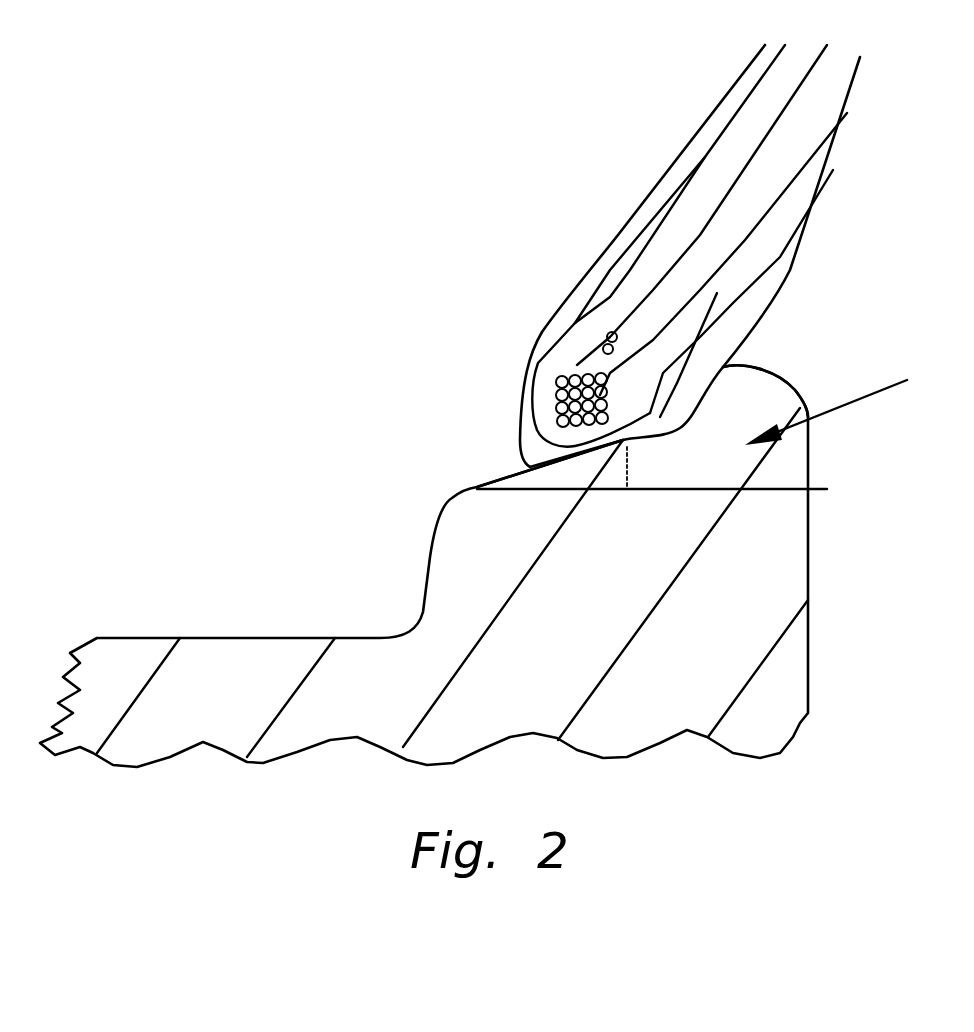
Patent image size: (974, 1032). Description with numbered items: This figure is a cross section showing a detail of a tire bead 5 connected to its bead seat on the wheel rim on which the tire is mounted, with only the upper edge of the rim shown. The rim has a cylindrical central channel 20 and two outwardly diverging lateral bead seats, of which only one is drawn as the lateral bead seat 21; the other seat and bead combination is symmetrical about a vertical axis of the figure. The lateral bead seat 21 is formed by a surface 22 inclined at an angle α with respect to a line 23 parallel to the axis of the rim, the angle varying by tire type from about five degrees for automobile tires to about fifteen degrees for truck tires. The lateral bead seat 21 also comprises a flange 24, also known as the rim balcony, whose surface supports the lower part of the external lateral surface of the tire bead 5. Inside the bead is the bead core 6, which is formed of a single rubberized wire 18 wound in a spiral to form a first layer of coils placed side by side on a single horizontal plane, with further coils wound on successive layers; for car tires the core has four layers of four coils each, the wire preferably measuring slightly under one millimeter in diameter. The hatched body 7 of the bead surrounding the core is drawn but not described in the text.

The tire bead 5 is at (583, 270).
The bead core 6 is at (550, 410).
The coating layer of tool 7 is at (689, 246).
The rubberized wire 18 is at (578, 363).
The cylindrical central channel 20 is at (264, 636).
The lateral bead seat 21 is at (848, 402).
The inclined surface 22 is at (522, 464).
The line parallel to the axis of the rim 23 is at (683, 491).
The flange 24 is at (757, 366).